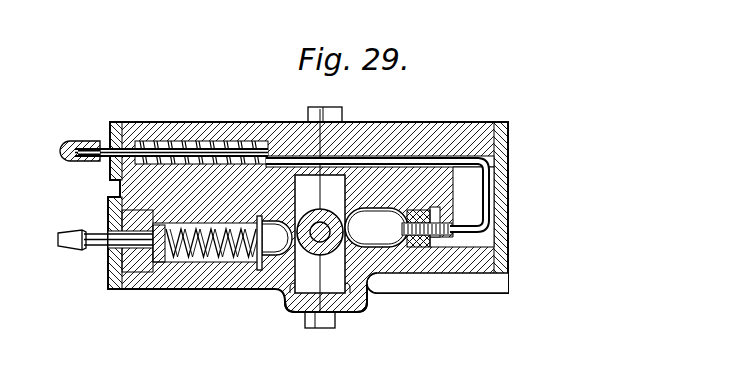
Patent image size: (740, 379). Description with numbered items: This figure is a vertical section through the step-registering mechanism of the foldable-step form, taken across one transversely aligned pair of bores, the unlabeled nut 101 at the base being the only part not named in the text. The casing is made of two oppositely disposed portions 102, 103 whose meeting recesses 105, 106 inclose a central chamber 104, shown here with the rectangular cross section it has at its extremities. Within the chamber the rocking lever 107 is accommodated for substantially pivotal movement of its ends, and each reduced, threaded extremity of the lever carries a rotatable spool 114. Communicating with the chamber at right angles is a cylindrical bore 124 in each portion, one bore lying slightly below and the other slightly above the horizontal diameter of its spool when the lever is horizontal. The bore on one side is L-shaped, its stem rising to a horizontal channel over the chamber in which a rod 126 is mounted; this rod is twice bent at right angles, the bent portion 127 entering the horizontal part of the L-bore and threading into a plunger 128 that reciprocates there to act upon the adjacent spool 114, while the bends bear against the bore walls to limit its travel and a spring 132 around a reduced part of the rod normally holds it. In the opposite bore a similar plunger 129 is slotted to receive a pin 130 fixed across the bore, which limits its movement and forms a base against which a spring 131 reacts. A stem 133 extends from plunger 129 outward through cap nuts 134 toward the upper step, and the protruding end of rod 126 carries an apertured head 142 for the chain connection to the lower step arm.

The lock nut 101 is at (347, 315).
The portion 102 is at (220, 134).
The portion 103 is at (467, 126).
The central chamber 104 is at (321, 208).
The recess 105 is at (290, 312).
The recess 106 is at (340, 253).
The lever 107 is at (366, 143).
The rotatable spool 114 is at (437, 283).
The cylindrical bore 124 is at (265, 289).
The rod 126 is at (408, 158).
The bent portion 127 is at (495, 185).
The plunger 128 is at (376, 227).
The plunger 129 is at (266, 218).
The pin 130 is at (248, 263).
The spring 131 is at (169, 263).
The spring 132 is at (162, 139).
The stem 133 is at (92, 249).
The cap nut 134 is at (122, 214).
The apertured head 142 is at (82, 141).